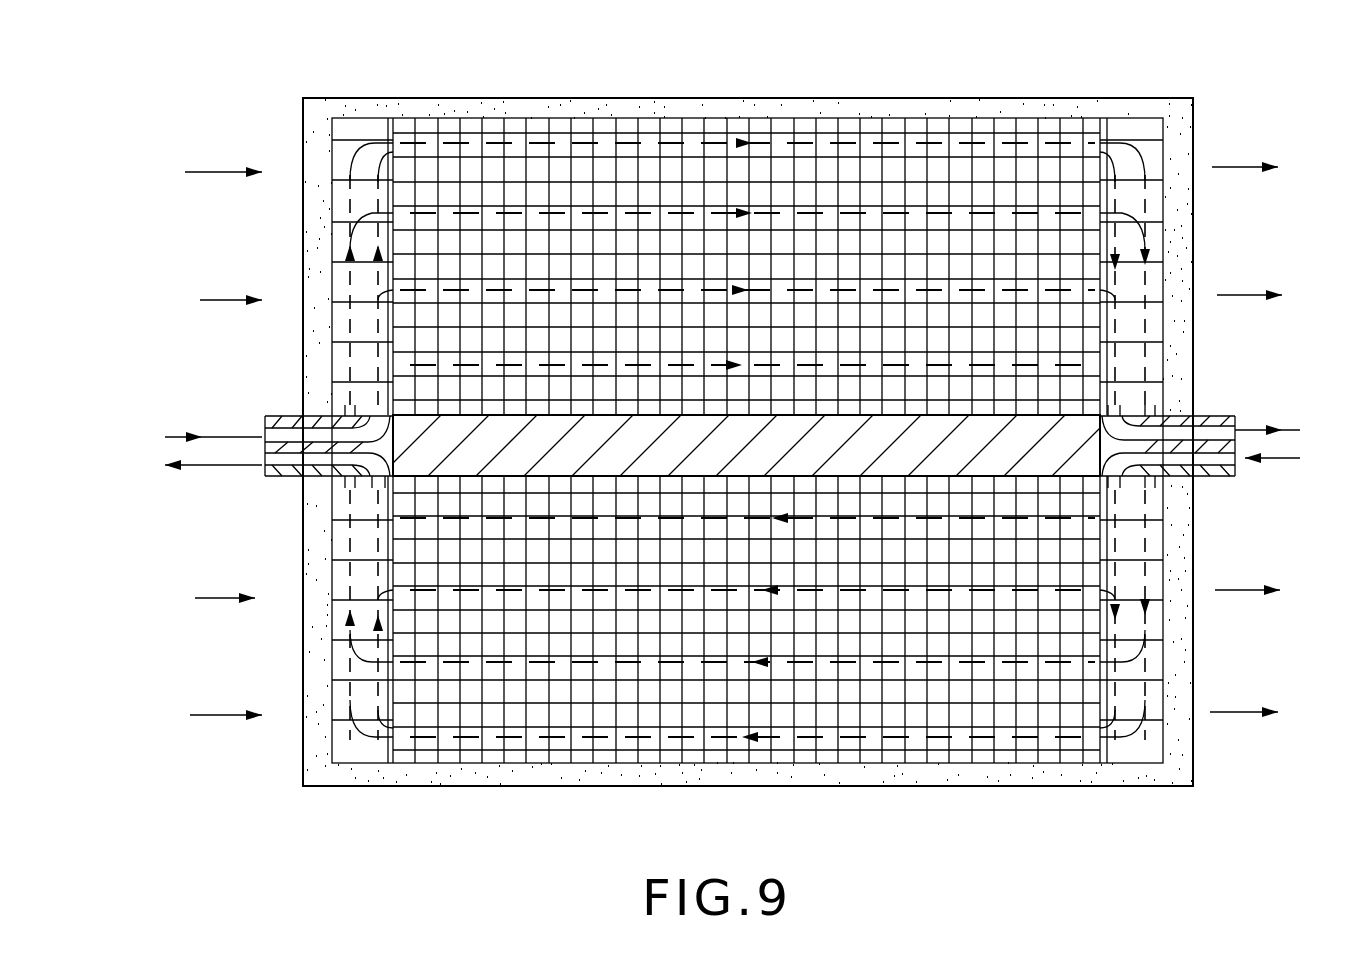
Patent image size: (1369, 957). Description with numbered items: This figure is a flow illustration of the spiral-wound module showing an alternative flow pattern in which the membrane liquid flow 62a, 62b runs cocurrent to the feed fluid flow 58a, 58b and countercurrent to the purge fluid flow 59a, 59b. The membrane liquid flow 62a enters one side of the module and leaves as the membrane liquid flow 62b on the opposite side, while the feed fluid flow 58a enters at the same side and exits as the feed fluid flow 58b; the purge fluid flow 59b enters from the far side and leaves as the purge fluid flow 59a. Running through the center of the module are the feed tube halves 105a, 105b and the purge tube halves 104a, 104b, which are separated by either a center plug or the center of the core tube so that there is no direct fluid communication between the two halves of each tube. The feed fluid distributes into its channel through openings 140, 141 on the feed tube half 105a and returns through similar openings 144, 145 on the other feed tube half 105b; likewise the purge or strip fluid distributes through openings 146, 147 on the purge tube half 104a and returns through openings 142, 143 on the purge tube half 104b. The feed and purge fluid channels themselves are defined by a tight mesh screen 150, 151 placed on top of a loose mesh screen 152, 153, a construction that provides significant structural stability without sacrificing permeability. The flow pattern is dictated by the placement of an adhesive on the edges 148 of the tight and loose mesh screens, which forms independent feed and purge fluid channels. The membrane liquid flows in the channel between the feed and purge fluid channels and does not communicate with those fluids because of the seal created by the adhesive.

The edge of the mesh screens 148 is at (558, 108).
The tight mesh screen 150 is at (555, 755).
The tight mesh screen 151 is at (858, 130).
The loose mesh screen 152 is at (362, 763).
The loose mesh screen 153 is at (345, 133).
The opening 140 is at (400, 417).
The opening 141 is at (345, 415).
The opening 142 is at (345, 490).
The opening 143 is at (380, 477).
The opening 144 is at (1105, 413).
The opening 145 is at (1158, 408).
The opening 146 is at (1158, 483).
The opening 147 is at (1108, 483).
The purge tube half 104a is at (1205, 466).
The purge tube half 104b is at (340, 476).
The feed tube half 105a is at (300, 425).
The feed tube half 105b is at (1203, 425).
The feed fluid flow 58a is at (186, 438).
The feed fluid flow 58b is at (1296, 430).
The purge fluid flow 59a is at (186, 468).
The purge fluid flow 59b is at (1301, 460).
The membrane liquid flow 62a is at (191, 443).
The membrane liquid flow 62b is at (1273, 439).